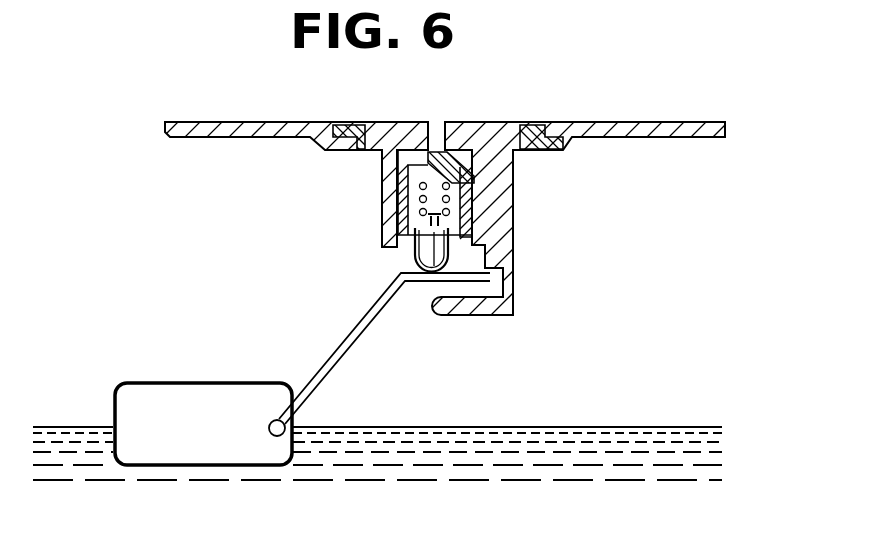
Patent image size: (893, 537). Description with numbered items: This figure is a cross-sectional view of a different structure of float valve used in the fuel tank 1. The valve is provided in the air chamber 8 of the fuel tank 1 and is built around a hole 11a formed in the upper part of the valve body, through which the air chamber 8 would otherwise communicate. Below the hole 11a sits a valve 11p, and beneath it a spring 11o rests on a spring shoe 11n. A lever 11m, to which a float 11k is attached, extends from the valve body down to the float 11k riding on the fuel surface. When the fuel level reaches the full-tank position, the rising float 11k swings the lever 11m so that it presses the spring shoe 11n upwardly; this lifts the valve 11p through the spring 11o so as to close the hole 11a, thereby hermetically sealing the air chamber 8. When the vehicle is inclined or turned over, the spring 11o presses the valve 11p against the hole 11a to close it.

The fuel tank 1 is at (650, 122).
The air chamber 8 is at (636, 316).
The hole 11a is at (436, 131).
The float 11k is at (177, 383).
The lever 11m is at (356, 339).
The spring shoe 11n is at (416, 250).
The spring 11o is at (412, 203).
The valve 11p is at (408, 170).